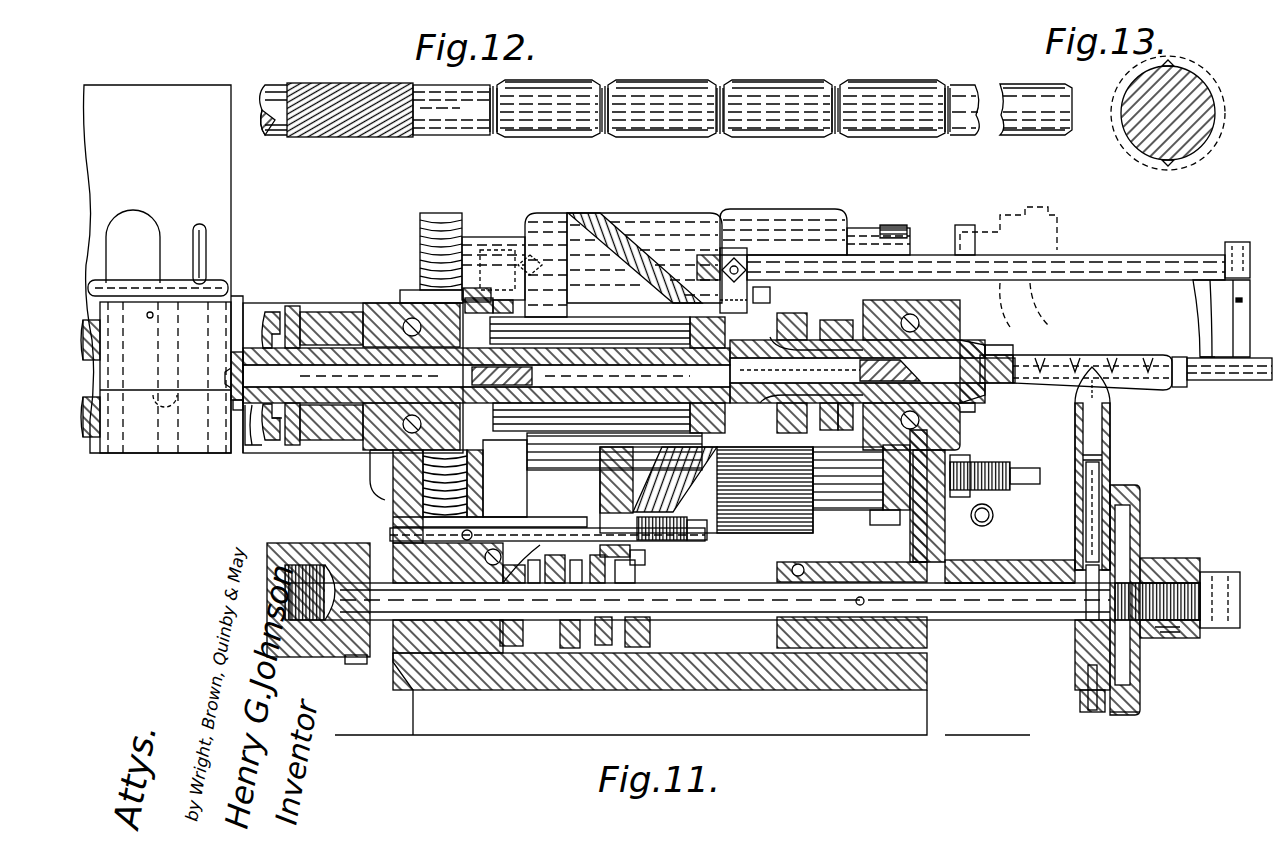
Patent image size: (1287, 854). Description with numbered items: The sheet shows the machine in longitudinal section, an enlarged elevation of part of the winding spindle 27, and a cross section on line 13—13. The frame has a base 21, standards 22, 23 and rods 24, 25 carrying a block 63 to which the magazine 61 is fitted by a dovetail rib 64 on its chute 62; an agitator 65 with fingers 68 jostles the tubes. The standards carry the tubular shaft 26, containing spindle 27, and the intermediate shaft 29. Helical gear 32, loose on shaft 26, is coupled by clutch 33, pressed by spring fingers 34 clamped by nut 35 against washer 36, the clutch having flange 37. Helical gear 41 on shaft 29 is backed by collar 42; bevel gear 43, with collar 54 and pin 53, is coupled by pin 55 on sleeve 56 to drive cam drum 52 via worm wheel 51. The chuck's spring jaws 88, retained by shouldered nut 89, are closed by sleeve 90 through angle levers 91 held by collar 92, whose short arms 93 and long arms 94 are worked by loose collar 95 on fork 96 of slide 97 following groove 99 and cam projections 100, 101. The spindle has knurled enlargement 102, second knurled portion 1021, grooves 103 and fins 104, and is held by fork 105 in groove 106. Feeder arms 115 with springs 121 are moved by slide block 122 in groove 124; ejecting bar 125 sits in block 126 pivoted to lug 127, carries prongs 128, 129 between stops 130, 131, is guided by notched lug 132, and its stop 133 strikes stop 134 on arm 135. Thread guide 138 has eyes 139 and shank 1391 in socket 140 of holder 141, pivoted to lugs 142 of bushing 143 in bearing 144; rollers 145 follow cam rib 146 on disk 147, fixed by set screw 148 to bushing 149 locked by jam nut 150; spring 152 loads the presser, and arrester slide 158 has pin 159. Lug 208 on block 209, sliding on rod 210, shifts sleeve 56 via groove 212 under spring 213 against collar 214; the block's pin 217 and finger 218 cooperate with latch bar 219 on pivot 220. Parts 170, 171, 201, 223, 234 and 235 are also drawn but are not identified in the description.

In FIG. 12, the section line 13 is at (672, 151).
In FIG. 11, the base 21 is at (770, 690).
In FIG. 11, the upright web or standard 22 is at (400, 470).
In FIG. 11, the upright web or standard 23 is at (960, 438).
In FIG. 11, the rod or bar 24 is at (96, 340).
In FIG. 11, the rod or bar 25 is at (90, 443).
In FIG. 11, the tubular shaft 26 is at (595, 356).
In FIG. 12, the mandrel or spindle 27 is at (555, 108).
In FIG. 13, the mandrel or spindle 27 is at (1155, 142).
In FIG. 11, the mandrel or spindle 27 is at (1224, 380).
In FIG. 11, the intermediate shaft 29 is at (722, 620).
In FIG. 11, the helical gear 32 is at (340, 442).
In FIG. 11, the clutch 33 is at (302, 444).
In FIG. 11, the spring fingers 34 is at (275, 465).
In FIG. 11, the nut 35 is at (258, 448).
In FIG. 11, the washer 36 is at (272, 452).
In FIG. 11, the lip or flange 37 is at (280, 444).
In FIG. 11, the helical gear 41 is at (352, 662).
In FIG. 11, the collar 42 is at (320, 565).
In FIG. 11, the bevel gear 43 is at (515, 648).
In FIG. 11, the worm wheel 51 is at (434, 228).
In FIG. 11, the cam drum 52 is at (660, 213).
In FIG. 11, the pin 53 is at (575, 583).
In FIG. 11, the collar 54 is at (570, 650).
In FIG. 11, the projecting pin 55 is at (600, 583).
In FIG. 11, the sleeve 56 is at (604, 645).
In FIG. 11, the magazine 61 is at (210, 178).
In FIG. 11, the chute 62 is at (243, 303).
In FIG. 11, the block 63 is at (258, 316).
In FIG. 11, the dovetail rib 64 is at (165, 377).
In FIG. 11, the agitator 65 is at (210, 280).
In FIG. 11, the fingers 68 is at (205, 258).
In FIG. 11, the spring jaws 88 is at (980, 355).
In FIG. 11, the shouldered nut 89 is at (950, 325).
In FIG. 11, the sleeve 90 is at (972, 410).
In FIG. 11, the angle levers 91 is at (830, 425).
In FIG. 11, the collar 92 is at (818, 335).
In FIG. 11, the short arms 93 is at (848, 425).
In FIG. 11, the long arms 94 is at (780, 410).
In FIG. 11, the loose collar 95 is at (775, 432).
In FIG. 11, the fork 96 is at (780, 318).
In FIG. 11, the slide 97 is at (855, 228).
In FIG. 11, the groove 99 is at (886, 226).
In FIG. 11, the cam projection 100 is at (826, 210).
In FIG. 11, the cam projection 101 is at (855, 480).
In FIG. 12, the enlargement 102 is at (360, 118).
In FIG. 11, the enlargement 102 is at (1010, 356).
In FIG. 12, the shallow peripheral grooves 103 is at (490, 133).
In FIG. 12, the longitudinal fins 104 is at (800, 68).
In FIG. 13, the longitudinal fins 104 is at (1170, 66).
In FIG. 11, the fork 105 is at (235, 365).
In FIG. 11, the groove 106 is at (240, 400).
In FIG. 11, the arms 115 is at (590, 319).
In FIG. 11, the spring 121 is at (870, 532).
In FIG. 11, the slide block 122 is at (790, 302).
In FIG. 11, the groove 124 is at (545, 212).
In FIG. 11, the bar 125 is at (1105, 255).
In FIG. 11, the block 126 is at (742, 258).
In FIG. 11, the lug 127 is at (738, 248).
In FIG. 11, the prong 128 is at (1200, 350).
In FIG. 11, the prong 129 is at (1238, 322).
In FIG. 11, the stop 130 is at (1225, 245).
In FIG. 11, the stop 131 is at (1244, 300).
In FIG. 11, the notched lug 132 is at (995, 210).
In FIG. 11, the adjustable stop 133 is at (712, 318).
In FIG. 11, the stop 134 is at (486, 321).
In FIG. 11, the arm 135 is at (420, 300).
In FIG. 11, the oscillative thread guide 138 is at (1128, 390).
In FIG. 11, the eyes 139 is at (1148, 360).
In FIG. 11, the socket 140 is at (1112, 464).
In FIG. 11, the holder 141 is at (1083, 516).
In FIG. 11, the lugs 142 is at (1075, 630).
In FIG. 11, the bushing 143 is at (1010, 559).
In FIG. 11, the bearing 144 is at (925, 540).
In FIG. 11, the rollers 145 is at (1078, 490).
In FIG. 11, the cam rib 146 is at (1140, 496).
In FIG. 11, the disk 147 is at (1140, 680).
In FIG. 11, the set screw 148 is at (1158, 635).
In FIG. 11, the bushing 149 is at (1150, 560).
In FIG. 11, the jam nut 150 is at (1210, 572).
In FIG. 11, the spring 152 is at (986, 526).
In FIG. 11, the slide 158 is at (1000, 462).
In FIG. 11, the pin 159 is at (1040, 474).
In FIG. 11, the sleeve 170 is at (892, 480).
In FIG. 11, the arm 171 is at (955, 228).
In FIG. 11, the tube 201 is at (597, 436).
In FIG. 11, the lug 208 is at (620, 495).
In FIG. 11, the block 209 is at (640, 565).
In FIG. 11, the rod 210 is at (635, 555).
In FIG. 11, the groove 212 is at (640, 648).
In FIG. 11, the spring 213 is at (695, 545).
In FIG. 11, the collar 214 is at (712, 546).
In FIG. 11, the pin or rod 217 is at (635, 575).
In FIG. 11, the finger 218 is at (530, 583).
In FIG. 11, the latch bar 219 is at (440, 600).
In FIG. 11, the pivot 220 is at (500, 590).
In FIG. 11, the lug 223 is at (555, 583).
In FIG. 11, the spring 234 is at (435, 500).
In FIG. 11, the block 235 is at (488, 240).
In FIG. 11, the second knurled portion 1021 is at (486, 374).
In FIG. 11, the shank 1391 is at (1095, 424).